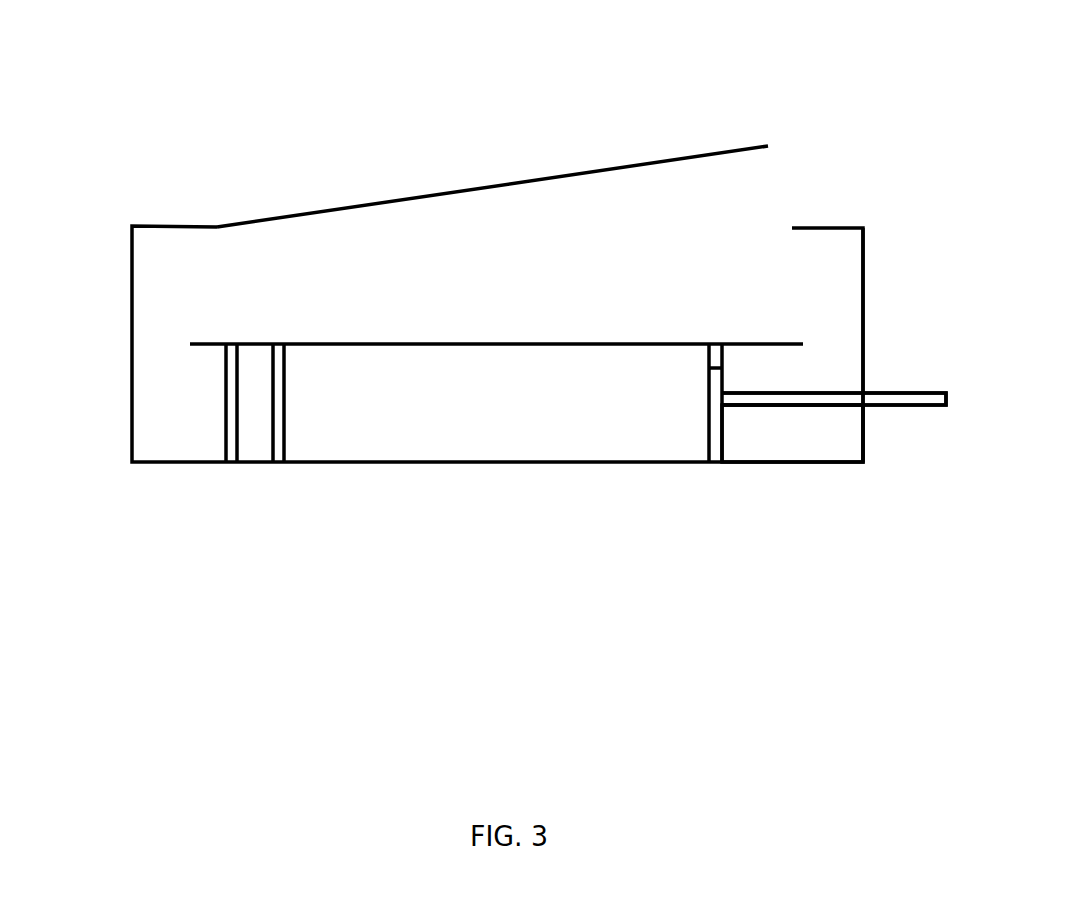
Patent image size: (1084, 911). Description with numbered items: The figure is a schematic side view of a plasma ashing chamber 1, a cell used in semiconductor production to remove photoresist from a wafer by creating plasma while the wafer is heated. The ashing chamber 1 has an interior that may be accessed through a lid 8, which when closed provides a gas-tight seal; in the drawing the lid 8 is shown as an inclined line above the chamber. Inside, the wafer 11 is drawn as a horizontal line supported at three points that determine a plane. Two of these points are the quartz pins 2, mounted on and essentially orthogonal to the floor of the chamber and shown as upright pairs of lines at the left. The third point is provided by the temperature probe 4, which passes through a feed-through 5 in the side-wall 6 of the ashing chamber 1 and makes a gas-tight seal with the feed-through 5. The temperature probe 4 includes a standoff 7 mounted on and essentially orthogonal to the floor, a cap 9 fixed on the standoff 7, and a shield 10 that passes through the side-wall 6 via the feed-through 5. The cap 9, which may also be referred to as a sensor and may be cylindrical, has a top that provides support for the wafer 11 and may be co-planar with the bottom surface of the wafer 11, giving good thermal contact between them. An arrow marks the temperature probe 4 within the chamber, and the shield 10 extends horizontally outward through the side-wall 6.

The ashing chamber 1 is at (433, 88).
The quartz pins 2 is at (273, 427).
The temperature probe 4 is at (781, 432).
The feed-through 5 is at (872, 400).
The side-wall 6 is at (863, 282).
The standoff 7 is at (707, 432).
The lid 8 is at (595, 166).
The cap 9 is at (707, 360).
The shield 10 is at (832, 407).
The wafer 11 is at (527, 344).